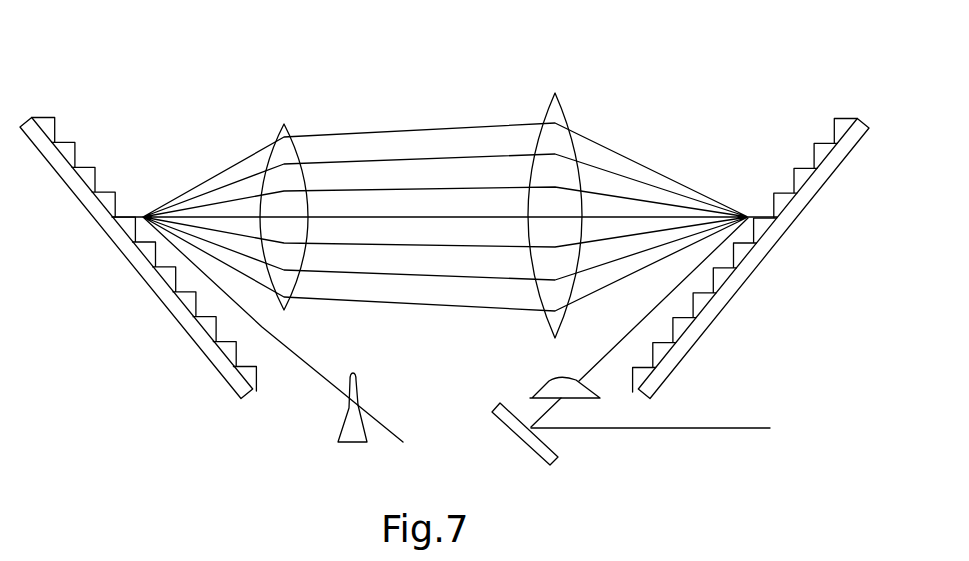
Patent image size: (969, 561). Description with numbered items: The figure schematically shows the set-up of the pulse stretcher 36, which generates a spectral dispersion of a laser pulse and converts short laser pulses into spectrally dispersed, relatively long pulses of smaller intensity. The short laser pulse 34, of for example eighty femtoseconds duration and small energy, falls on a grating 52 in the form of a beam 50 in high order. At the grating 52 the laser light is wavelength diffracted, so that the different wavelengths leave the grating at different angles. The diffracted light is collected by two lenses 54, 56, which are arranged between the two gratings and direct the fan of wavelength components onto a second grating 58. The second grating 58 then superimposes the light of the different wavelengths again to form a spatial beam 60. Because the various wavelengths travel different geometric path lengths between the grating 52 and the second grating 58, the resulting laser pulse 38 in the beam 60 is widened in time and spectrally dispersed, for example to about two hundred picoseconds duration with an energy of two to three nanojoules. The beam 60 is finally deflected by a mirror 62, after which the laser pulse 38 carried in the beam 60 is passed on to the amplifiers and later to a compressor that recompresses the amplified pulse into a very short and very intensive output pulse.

The pulse stretcher 36 is at (425, 105).
The grating 52 is at (108, 240).
The second grating 58 is at (768, 242).
The lens 54 is at (284, 137).
The lens 56 is at (557, 115).
The beam 50 is at (318, 373).
The laser pulse 34 is at (358, 390).
The beam 60 is at (602, 363).
The laser pulse 38 is at (548, 383).
The mirror 62 is at (527, 440).